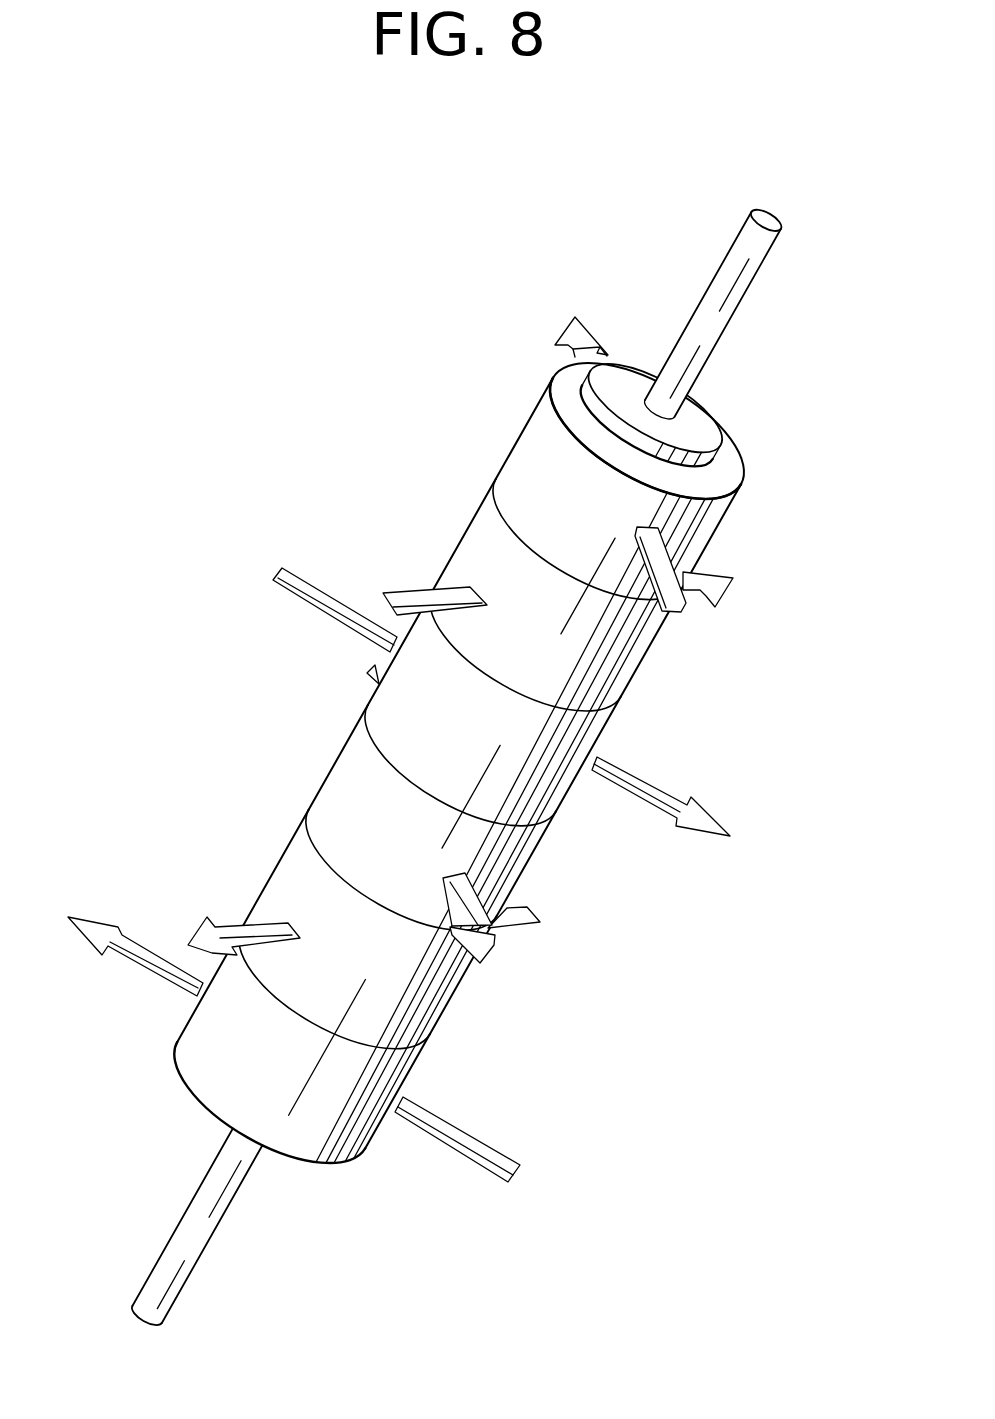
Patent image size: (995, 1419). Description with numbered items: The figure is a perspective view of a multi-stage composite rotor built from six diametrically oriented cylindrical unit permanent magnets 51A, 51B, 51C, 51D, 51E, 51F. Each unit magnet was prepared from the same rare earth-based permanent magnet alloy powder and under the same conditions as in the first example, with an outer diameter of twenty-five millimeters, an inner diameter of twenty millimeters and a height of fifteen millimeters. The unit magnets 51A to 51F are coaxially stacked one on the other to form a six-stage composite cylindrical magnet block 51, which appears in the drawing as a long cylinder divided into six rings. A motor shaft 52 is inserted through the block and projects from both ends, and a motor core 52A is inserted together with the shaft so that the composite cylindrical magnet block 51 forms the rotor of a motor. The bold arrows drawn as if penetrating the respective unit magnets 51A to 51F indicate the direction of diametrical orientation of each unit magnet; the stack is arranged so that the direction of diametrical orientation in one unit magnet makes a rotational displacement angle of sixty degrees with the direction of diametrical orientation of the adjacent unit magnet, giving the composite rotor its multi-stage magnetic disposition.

The composite cylindrical magnet block 51 is at (722, 472).
The unit permanent magnet 51A is at (698, 525).
The unit permanent magnet 51B is at (612, 662).
The unit permanent magnet 51C is at (548, 782).
The unit permanent magnet 51D is at (507, 852).
The unit permanent magnet 51E is at (438, 975).
The unit permanent magnet 51F is at (385, 1078).
The motor shaft 52 is at (742, 283).
The motor core 52A is at (702, 425).